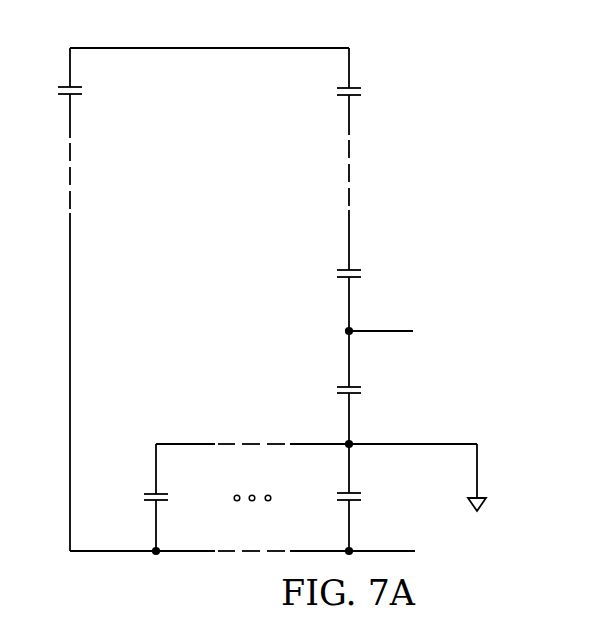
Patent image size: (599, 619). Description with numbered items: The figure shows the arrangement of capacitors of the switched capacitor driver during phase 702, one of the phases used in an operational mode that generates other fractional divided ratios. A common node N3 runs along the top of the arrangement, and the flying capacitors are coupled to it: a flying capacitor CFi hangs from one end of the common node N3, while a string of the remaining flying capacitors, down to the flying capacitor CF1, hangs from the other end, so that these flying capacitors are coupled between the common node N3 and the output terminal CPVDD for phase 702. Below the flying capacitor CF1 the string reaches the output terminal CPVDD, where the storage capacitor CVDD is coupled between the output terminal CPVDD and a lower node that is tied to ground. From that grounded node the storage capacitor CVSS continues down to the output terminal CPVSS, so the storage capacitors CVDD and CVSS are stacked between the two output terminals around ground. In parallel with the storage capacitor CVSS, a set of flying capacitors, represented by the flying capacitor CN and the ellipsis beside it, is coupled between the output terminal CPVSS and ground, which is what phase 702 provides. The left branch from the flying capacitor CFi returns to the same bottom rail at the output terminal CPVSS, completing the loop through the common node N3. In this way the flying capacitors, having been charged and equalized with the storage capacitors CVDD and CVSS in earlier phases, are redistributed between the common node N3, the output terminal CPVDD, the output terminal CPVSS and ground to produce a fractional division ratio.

The phase 702 is at (490, 68).
The common node N3 is at (209, 36).
The flying capacitor CFi is at (52, 93).
The flying capacitor CF1 is at (369, 276).
The output terminal CPVDD is at (416, 332).
The storage capacitor CVDD is at (378, 392).
The flying capacitor CN is at (139, 497).
The storage capacitor CVSS is at (378, 499).
The output terminal CPVSS is at (278, 551).